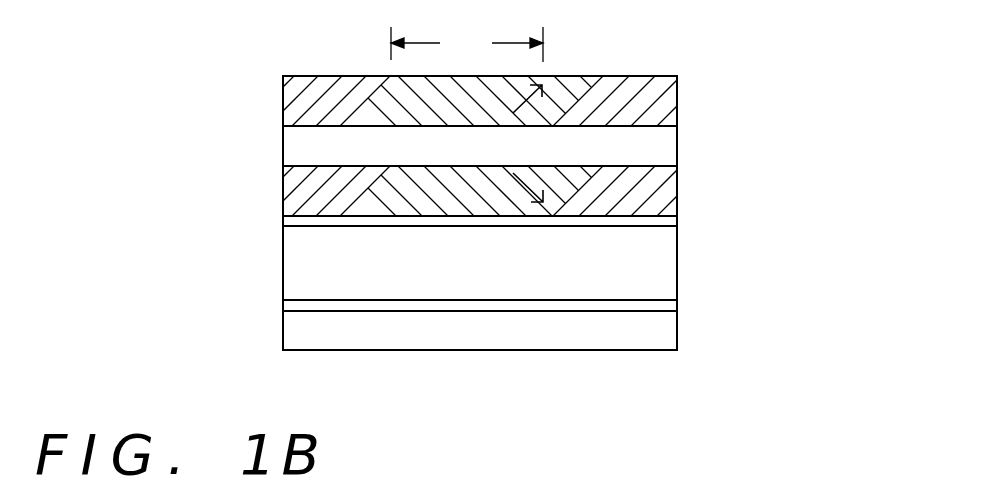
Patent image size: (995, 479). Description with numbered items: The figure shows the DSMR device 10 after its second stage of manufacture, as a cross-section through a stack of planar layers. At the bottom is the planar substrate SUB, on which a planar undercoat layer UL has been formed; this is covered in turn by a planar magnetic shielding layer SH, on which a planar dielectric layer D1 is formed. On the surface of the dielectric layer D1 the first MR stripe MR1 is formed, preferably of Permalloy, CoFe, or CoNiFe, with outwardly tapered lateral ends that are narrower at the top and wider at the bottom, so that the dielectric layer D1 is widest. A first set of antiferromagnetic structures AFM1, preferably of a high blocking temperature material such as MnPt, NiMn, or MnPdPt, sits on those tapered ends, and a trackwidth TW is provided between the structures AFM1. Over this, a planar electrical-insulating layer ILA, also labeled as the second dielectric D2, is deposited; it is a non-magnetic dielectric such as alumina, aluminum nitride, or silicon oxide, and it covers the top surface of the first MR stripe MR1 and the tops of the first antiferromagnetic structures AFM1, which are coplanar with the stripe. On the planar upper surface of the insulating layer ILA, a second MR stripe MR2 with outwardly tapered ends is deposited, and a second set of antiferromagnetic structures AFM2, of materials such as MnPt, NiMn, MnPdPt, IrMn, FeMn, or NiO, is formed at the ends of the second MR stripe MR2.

The DSMR device 10 is at (298, 362).
The second set of antiferromagnetic structures AFM2 is at (298, 97).
The second MR stripe MR2 is at (402, 83).
The trackwidth TW is at (467, 43).
The planar electrical-insulating layer ILA is at (581, 146).
The second decoupling layer (interlayer) D2 is at (668, 145).
The first set of antiferromagnetic structures AFM1 is at (297, 182).
The first MR stripe MR1 is at (418, 170).
The dielectric layer D1 is at (298, 220).
The magnetic shielding layer SH is at (670, 262).
The undercoat layer UL is at (298, 304).
The substrate SUB is at (668, 334).